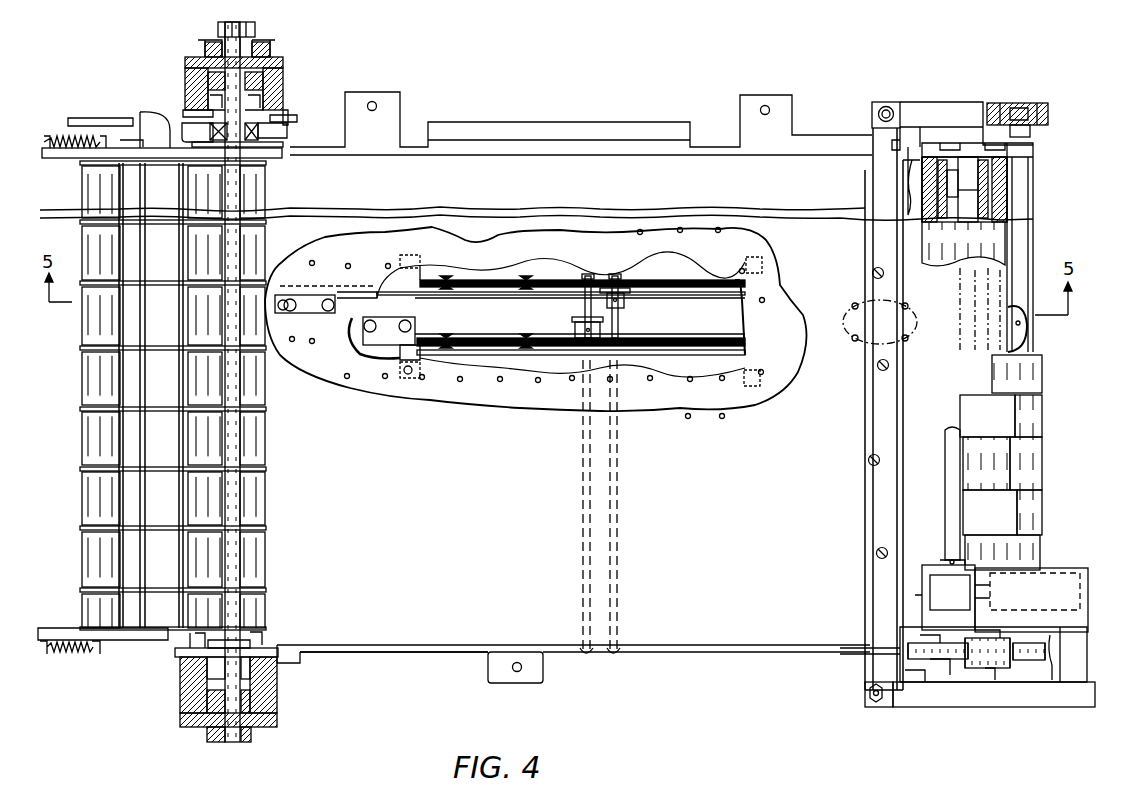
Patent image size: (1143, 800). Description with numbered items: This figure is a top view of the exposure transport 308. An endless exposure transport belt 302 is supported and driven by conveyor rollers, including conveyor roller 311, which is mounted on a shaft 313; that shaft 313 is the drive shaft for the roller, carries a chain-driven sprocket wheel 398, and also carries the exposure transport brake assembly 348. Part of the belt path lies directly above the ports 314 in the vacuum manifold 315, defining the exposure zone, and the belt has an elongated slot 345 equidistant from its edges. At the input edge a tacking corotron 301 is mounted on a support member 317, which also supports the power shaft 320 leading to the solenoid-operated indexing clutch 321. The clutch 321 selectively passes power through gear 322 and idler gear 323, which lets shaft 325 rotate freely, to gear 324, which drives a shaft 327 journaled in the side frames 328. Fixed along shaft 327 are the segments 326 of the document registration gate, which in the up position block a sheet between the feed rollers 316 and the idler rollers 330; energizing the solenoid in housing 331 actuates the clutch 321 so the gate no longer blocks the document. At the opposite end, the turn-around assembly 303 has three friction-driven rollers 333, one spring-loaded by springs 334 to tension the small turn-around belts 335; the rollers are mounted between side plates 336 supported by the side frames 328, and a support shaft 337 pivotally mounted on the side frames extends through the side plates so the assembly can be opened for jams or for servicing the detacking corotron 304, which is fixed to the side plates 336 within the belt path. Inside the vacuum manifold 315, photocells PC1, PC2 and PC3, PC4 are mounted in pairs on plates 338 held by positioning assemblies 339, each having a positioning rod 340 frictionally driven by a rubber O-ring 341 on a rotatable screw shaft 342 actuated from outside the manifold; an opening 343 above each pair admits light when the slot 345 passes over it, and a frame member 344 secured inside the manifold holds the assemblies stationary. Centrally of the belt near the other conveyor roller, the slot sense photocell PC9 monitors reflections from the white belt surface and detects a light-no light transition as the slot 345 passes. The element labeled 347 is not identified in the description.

The tacking corotron 301 is at (870, 240).
The exposure transport belt 302 is at (713, 640).
The turn-around assembly 303 is at (178, 382).
The detacking corotron 304 is at (148, 622).
The exposure transport 308 is at (425, 660).
The conveyor roller 311 is at (236, 641).
The shaft 313 is at (283, 80).
The ports 314 is at (470, 386).
The vacuum manifold 315 is at (752, 393).
The feed roller 316 is at (998, 423).
The support member 317 is at (912, 116).
The power shaft 320 is at (950, 448).
The indexing clutch 321 is at (940, 560).
The gear 322 is at (905, 654).
The idler gear 323 is at (990, 672).
The gear 324 is at (1046, 650).
The shaft 325 is at (972, 684).
The document registration gate segments 326 is at (1025, 470).
The shaft 327 is at (1036, 128).
The side frames 328 is at (385, 118).
The idler rollers 330 is at (1035, 521).
The housing 331 is at (1045, 592).
The turn-around rollers 333 is at (86, 443).
The springs 334 is at (60, 136).
The turn-around belts 335 is at (268, 432).
The side plates 336 is at (120, 150).
The support shaft 337 is at (234, 511).
The plate 338 is at (408, 330).
The positioning assembly 339 is at (690, 320).
The positioning rod 340 is at (510, 343).
The rubber O-ring 341 is at (618, 276).
The screw shaft 342 is at (620, 470).
The opening 343 is at (312, 302).
The frame member 344 is at (748, 289).
The slot 345 is at (856, 308).
The upper bearing housing 347 is at (333, 34).
The exposure transport brake assembly 348 is at (341, 703).
The sprocket wheel 398 is at (206, 58).
The photocell PC1 is at (395, 306).
The photocell PC2 is at (325, 356).
The photocell PC3 is at (302, 327).
The photocell PC4 is at (290, 277).
The slot sense photocell PC9 is at (1027, 340).